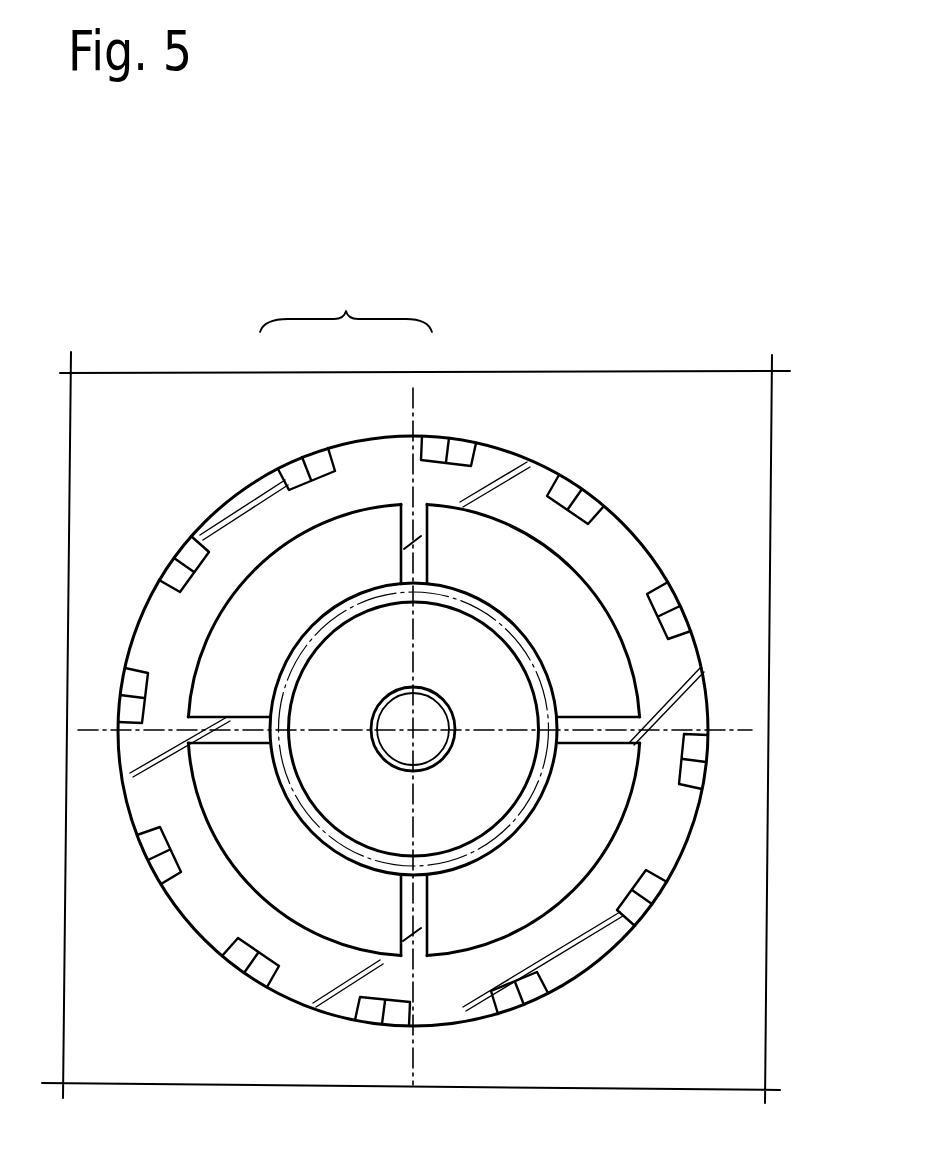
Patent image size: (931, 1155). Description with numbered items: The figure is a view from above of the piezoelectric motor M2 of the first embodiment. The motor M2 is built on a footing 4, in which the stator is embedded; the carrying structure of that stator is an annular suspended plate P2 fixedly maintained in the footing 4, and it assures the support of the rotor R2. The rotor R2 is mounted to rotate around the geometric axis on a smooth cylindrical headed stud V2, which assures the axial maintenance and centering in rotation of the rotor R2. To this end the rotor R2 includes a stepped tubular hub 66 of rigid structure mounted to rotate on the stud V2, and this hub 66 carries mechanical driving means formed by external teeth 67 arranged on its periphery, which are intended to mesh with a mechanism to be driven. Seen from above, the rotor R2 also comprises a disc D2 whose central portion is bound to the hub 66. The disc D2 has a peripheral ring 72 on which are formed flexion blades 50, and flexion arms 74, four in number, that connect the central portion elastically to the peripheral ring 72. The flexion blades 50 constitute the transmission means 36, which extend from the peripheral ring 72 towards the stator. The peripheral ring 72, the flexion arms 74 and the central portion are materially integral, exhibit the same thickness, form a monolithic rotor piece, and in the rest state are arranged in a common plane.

The footing 4 is at (752, 444).
The transmission means 36 is at (214, 498).
The flexion blades 50 is at (291, 470).
The peripheral ring 72 is at (355, 462).
The flexion arms 74 is at (411, 535).
The stepped tubular hub 66 is at (453, 632).
The external teeth 67 is at (530, 788).
The headed stud V2 is at (423, 738).
The piezoelectric motor M2 is at (640, 333).
The rotor R2 is at (648, 518).
The disc D2 is at (346, 304).
The annular suspended plate P2 is at (323, 900).